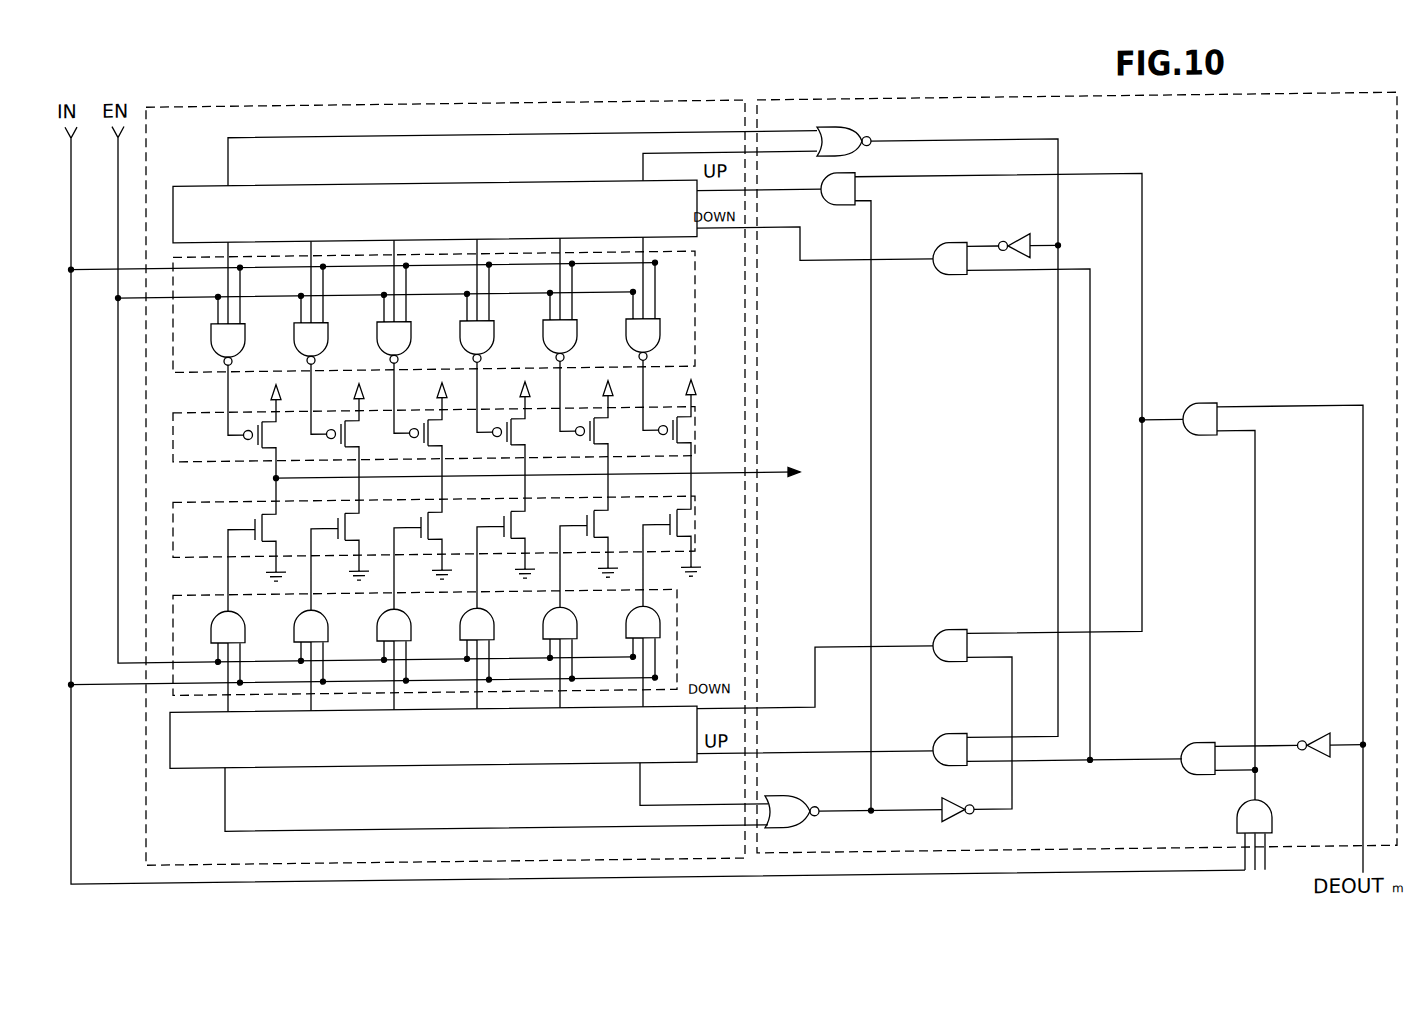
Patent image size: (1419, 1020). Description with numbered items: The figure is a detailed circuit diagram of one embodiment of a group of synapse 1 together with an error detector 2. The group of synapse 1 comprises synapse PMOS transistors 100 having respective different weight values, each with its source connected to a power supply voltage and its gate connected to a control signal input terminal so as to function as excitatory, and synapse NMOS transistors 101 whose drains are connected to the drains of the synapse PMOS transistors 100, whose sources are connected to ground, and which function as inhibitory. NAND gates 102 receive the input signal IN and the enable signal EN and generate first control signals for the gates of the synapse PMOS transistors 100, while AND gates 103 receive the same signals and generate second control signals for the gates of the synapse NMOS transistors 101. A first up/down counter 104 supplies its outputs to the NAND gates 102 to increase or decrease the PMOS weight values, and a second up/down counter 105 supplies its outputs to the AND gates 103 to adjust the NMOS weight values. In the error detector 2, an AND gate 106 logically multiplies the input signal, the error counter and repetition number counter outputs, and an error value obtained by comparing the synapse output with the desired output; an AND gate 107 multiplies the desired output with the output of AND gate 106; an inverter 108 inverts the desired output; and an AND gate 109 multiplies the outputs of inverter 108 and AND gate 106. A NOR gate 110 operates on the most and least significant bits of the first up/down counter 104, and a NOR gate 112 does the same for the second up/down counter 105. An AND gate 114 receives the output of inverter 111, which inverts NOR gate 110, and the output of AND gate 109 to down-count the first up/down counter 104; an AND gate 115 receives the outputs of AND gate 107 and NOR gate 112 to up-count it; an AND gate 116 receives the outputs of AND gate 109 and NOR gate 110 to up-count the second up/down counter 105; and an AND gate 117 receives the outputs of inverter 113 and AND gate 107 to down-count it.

The group of synapse 1 is at (362, 108).
The error detector 2 is at (976, 106).
The synapse PMOS transistors 100 is at (172, 442).
The synapse NMOS transistors 101 is at (172, 546).
The NAND gates 102 is at (173, 358).
The AND gates 103 is at (677, 603).
The first up/down counter 104 is at (182, 188).
The second up/down counter 105 is at (288, 772).
The AND gate 106 is at (1273, 838).
The AND gate 107 is at (1197, 450).
The inverter 108 is at (1320, 768).
The AND gate 109 is at (1200, 789).
The NOR gate 110 is at (836, 137).
The inverter 111 is at (1020, 246).
The NOR gate 112 is at (853, 824).
The inverter 113 is at (953, 822).
The AND gate 114 is at (953, 288).
The AND gate 115 is at (838, 216).
The AND gate 116 is at (952, 745).
The AND gate 117 is at (956, 641).